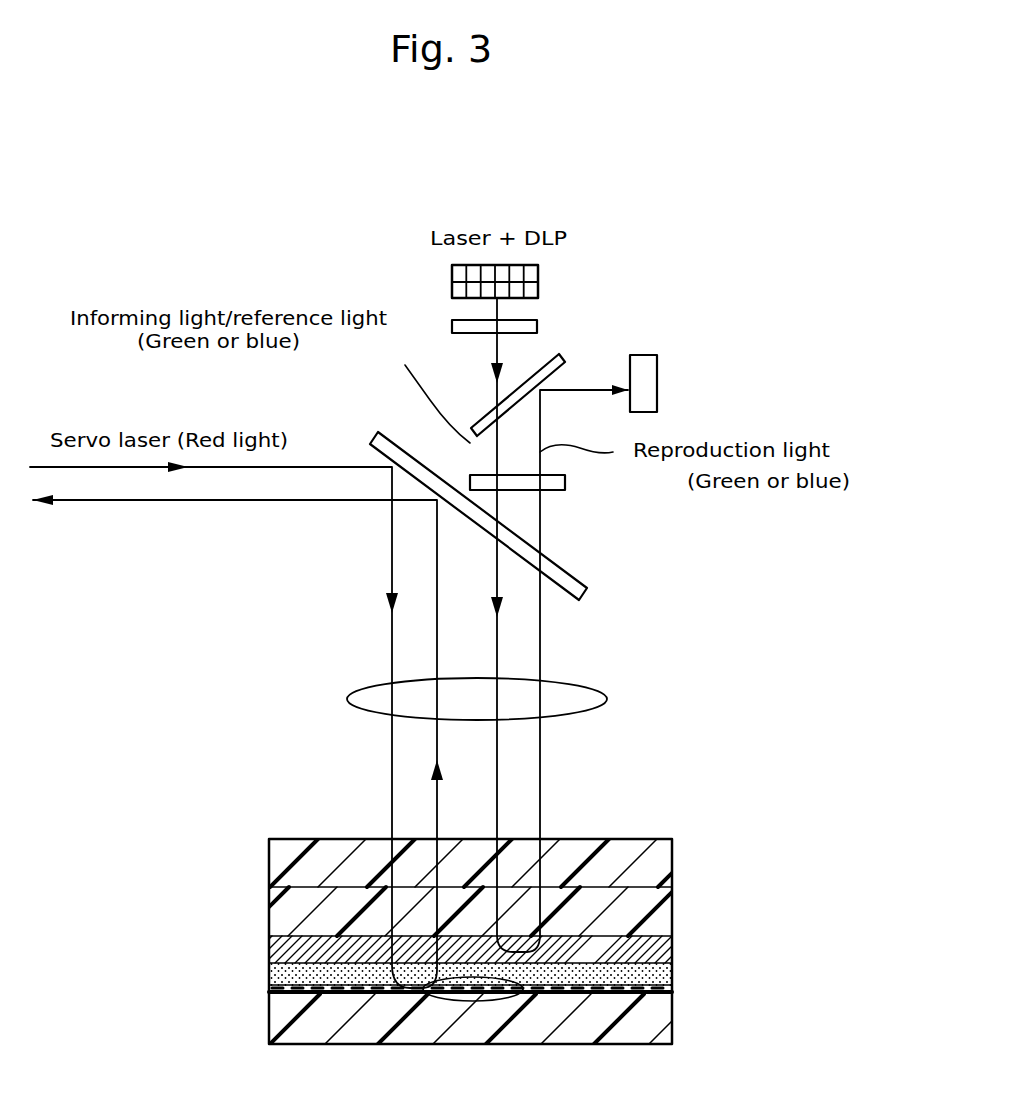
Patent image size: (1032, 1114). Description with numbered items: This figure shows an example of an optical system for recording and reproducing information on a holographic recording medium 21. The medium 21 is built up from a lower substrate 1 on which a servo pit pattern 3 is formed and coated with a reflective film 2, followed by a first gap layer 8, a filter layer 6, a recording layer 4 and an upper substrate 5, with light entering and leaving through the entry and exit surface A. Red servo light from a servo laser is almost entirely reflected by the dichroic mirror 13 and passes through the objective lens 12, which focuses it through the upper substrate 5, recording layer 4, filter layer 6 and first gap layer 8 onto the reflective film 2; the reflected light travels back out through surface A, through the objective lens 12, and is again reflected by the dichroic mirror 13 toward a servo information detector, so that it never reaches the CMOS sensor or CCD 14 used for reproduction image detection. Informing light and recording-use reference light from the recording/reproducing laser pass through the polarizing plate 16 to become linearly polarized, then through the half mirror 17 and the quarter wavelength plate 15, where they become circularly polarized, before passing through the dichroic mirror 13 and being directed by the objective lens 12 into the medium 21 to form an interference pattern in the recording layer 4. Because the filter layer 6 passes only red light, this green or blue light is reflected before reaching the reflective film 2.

The substrate 1 is at (672, 1013).
The reflective film 2 is at (269, 985).
The servo pit pattern 3 is at (480, 1001).
The recording layer 4 is at (672, 905).
The upper substrate 5 is at (487, 863).
The filter layer 6 is at (672, 945).
The first gap layer 8 is at (672, 975).
The objective lens 12 is at (597, 698).
The dichroic mirror 13 is at (587, 587).
The CMOS sensor or CCD 14 is at (657, 384).
The 1/4 wavelength plate 15 is at (565, 482).
The polarizing plate 16 is at (538, 327).
The half mirror 17 is at (565, 353).
The holographic recording medium 21 is at (656, 826).
The entry and exit surface A is at (292, 840).